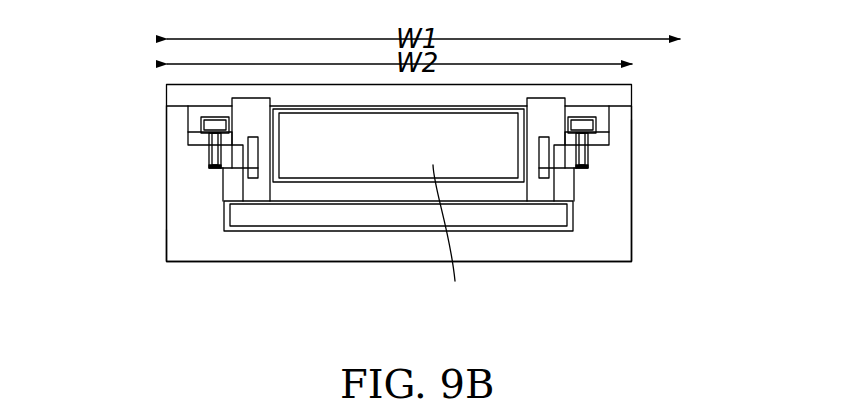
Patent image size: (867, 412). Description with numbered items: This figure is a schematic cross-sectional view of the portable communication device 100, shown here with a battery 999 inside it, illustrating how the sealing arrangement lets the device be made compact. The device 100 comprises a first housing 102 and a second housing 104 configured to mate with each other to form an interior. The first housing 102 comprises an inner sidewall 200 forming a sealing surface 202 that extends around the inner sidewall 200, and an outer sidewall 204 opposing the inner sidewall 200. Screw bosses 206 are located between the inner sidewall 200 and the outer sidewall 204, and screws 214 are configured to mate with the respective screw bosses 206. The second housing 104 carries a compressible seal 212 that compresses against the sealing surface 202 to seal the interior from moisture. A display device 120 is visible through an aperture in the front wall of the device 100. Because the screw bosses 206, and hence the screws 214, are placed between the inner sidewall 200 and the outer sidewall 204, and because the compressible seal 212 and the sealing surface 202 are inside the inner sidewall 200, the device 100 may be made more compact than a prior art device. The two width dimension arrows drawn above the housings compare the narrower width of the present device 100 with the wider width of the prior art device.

The device 100 is at (148, 78).
The first housing 102 is at (620, 250).
The second housing 104 is at (635, 85).
The display device 120 is at (241, 215).
The inner sidewall 200 is at (243, 190).
The sealing surface 202 is at (258, 162).
The outer sidewall 204 is at (166, 255).
The screw bosses 206 is at (175, 155).
The compressible seal 212 is at (225, 168).
The screws 214 is at (201, 127).
The battery 999 is at (460, 236).